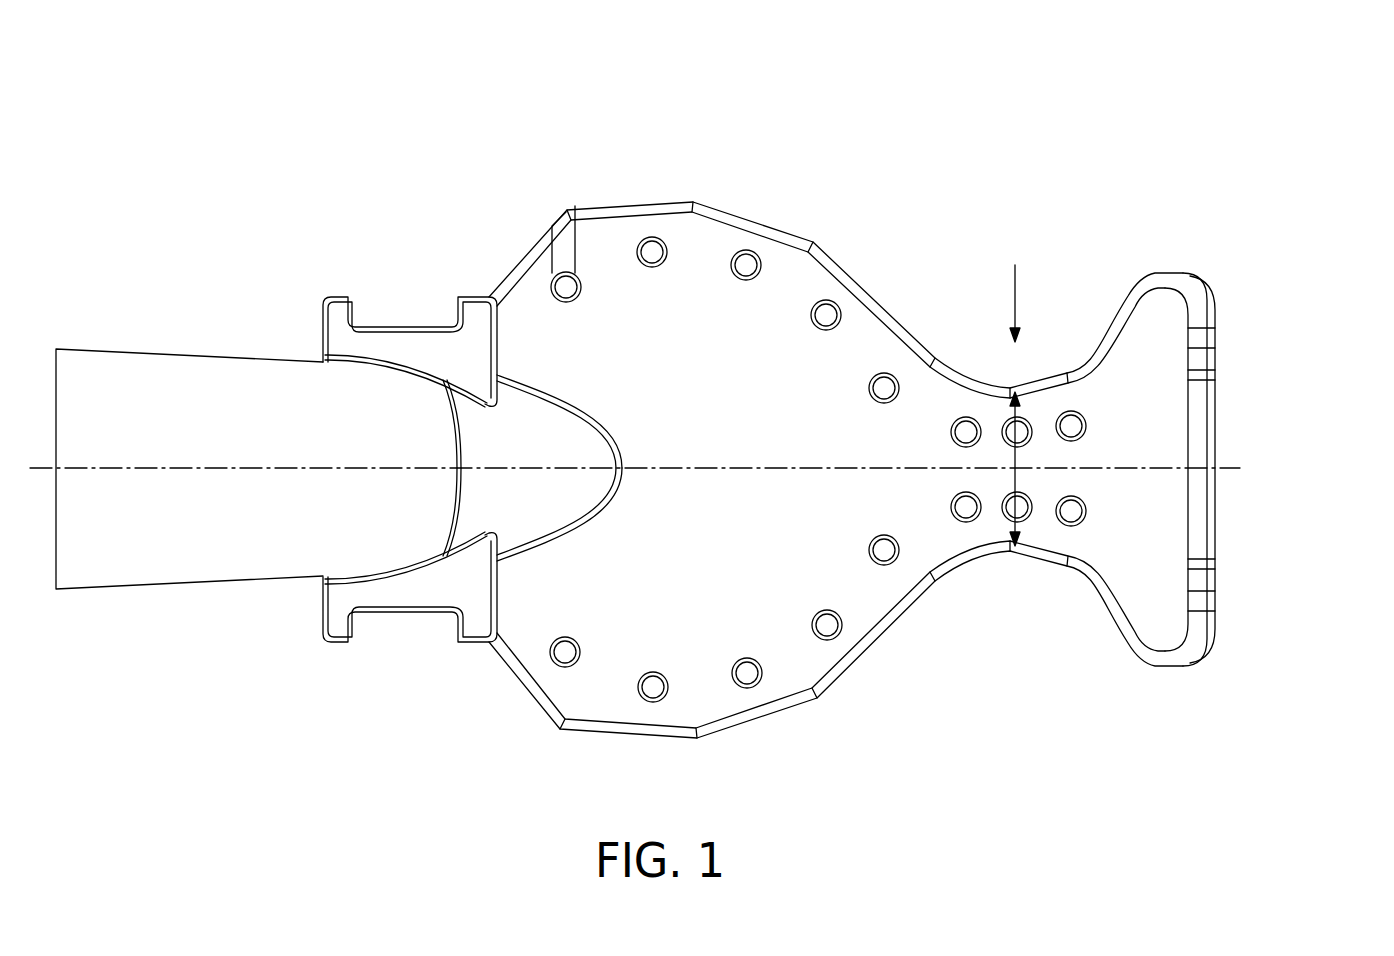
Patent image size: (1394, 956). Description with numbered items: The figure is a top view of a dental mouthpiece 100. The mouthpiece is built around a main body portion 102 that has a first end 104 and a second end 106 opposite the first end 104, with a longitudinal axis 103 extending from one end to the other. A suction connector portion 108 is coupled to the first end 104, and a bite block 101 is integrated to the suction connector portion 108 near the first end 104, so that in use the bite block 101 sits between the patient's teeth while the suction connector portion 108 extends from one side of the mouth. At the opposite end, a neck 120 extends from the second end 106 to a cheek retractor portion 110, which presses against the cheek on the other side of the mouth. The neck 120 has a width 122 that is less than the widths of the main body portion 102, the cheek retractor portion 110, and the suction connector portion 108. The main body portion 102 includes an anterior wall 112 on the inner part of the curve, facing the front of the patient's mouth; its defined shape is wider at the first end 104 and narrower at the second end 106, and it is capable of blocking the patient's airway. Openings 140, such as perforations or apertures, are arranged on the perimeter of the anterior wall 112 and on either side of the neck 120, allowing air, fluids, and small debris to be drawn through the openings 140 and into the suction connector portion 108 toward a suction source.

The dental mouthpiece 100 is at (1112, 50).
The bite block 101 is at (340, 296).
The main body portion 102 is at (795, 142).
The longitudinal axis 103 is at (1245, 468).
The first end 104 is at (458, 716).
The second end 106 is at (970, 686).
The suction connector portion 108 is at (162, 353).
The cheek retractor portion 110 is at (1185, 668).
The anterior wall 112 is at (622, 257).
The neck 120 is at (1015, 265).
The width 122 is at (1022, 462).
The openings 140 is at (562, 280).